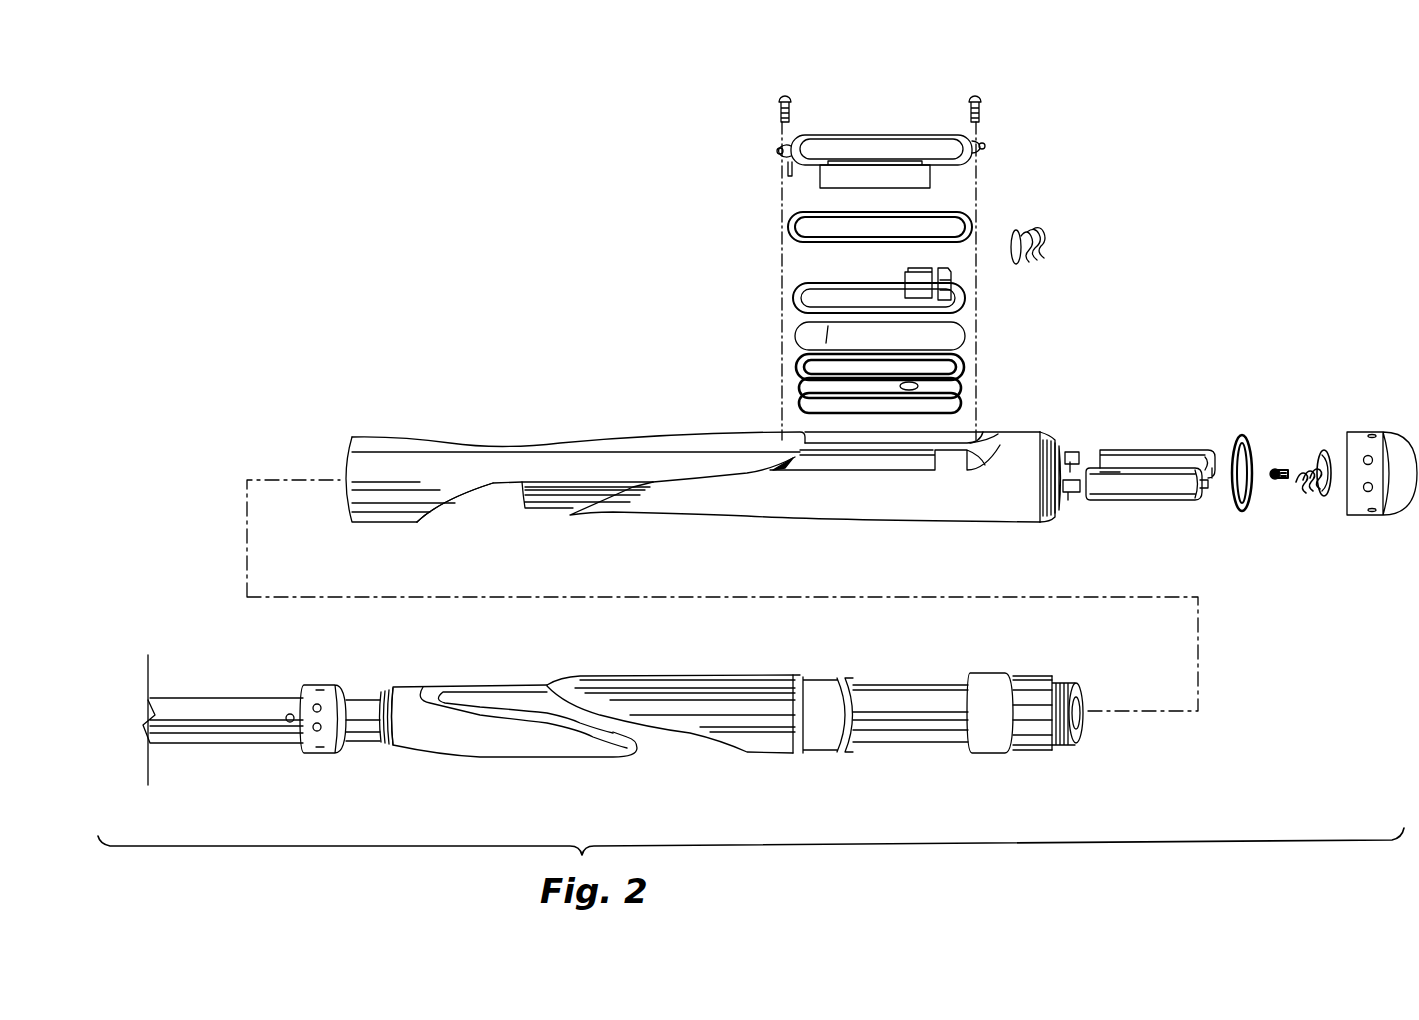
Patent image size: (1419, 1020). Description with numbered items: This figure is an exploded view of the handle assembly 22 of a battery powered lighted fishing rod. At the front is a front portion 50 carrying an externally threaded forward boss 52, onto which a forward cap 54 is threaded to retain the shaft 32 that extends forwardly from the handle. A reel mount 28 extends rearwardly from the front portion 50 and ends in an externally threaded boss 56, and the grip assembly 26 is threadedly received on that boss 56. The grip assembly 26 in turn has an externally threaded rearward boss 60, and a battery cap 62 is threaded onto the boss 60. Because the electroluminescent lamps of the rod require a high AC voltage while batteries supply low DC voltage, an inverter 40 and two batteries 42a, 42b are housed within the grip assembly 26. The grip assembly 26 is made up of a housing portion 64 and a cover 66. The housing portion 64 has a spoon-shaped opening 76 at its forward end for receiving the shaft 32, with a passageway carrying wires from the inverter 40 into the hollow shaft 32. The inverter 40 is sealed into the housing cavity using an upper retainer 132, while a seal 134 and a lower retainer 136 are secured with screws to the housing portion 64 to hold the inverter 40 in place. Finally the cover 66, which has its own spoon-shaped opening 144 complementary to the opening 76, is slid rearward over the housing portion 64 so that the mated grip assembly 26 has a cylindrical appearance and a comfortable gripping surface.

The handle assembly 22 is at (1112, 378).
The grip assembly 26 is at (985, 440).
The reel mount 28 is at (928, 688).
The shaft 32 is at (218, 695).
The inverter 40 is at (965, 330).
The battery 42a is at (1150, 492).
The battery 42b is at (1165, 458).
The front portion 50 is at (490, 680).
The externally threaded forward boss 52 is at (390, 690).
The forward cap 54 is at (322, 684).
The externally threaded boss 56 is at (1062, 683).
The externally threaded rearward boss 60 is at (1050, 498).
The battery cap 62 is at (1393, 516).
The housing portion 64 is at (955, 523).
The cover 66 is at (656, 440).
The spoon-shaped opening 76 is at (627, 490).
The upper retainer 132 is at (955, 295).
The seal 134 is at (972, 225).
The lower retainer 136 is at (985, 143).
The spoon-shaped opening 144 is at (458, 497).